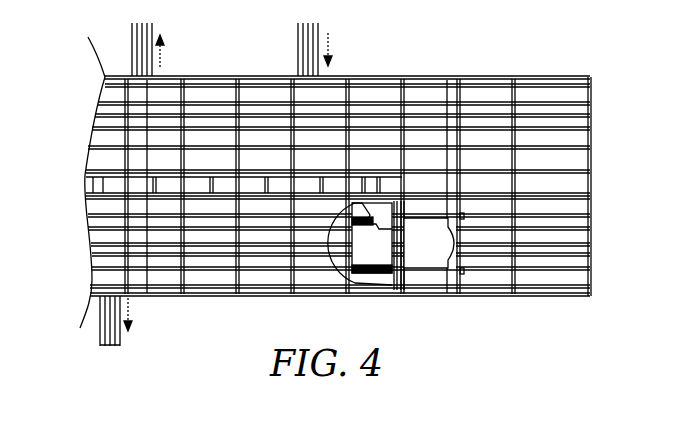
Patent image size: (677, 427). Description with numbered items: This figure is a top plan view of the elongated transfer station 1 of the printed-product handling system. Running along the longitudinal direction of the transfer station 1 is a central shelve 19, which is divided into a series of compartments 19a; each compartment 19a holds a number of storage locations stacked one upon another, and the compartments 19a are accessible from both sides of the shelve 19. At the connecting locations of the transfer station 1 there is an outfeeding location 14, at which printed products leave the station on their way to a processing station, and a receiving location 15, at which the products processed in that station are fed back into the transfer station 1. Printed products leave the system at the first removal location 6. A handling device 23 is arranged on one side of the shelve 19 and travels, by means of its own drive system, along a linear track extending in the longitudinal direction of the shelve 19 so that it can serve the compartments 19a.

The transfer station 1 is at (600, 80).
The first removal location 6 is at (122, 295).
The outfeeding location 14 is at (130, 76).
The receiving location 15 is at (297, 76).
The central shelve 19 is at (218, 169).
The compartment 19a is at (160, 193).
The handling device 23 is at (437, 248).